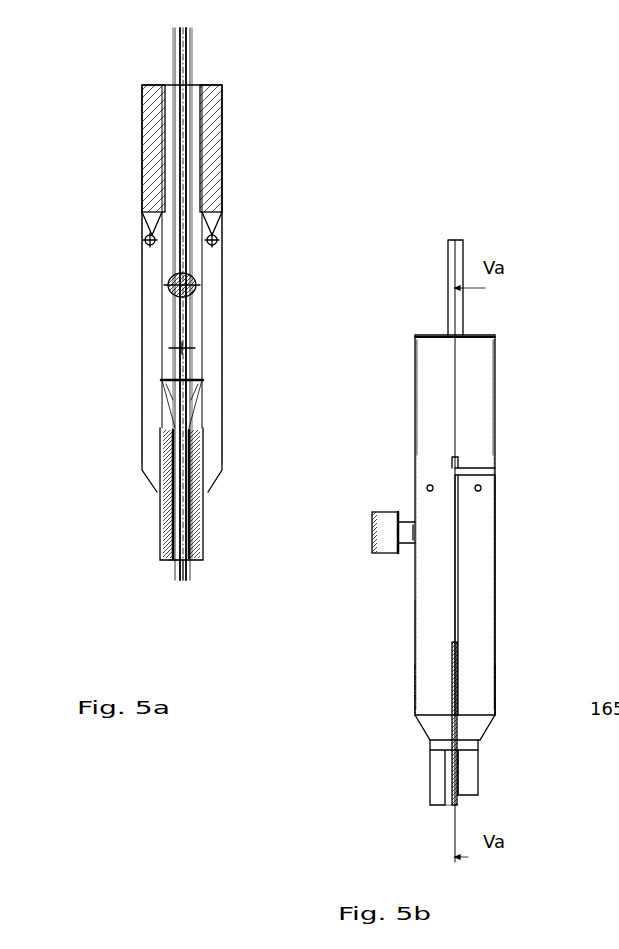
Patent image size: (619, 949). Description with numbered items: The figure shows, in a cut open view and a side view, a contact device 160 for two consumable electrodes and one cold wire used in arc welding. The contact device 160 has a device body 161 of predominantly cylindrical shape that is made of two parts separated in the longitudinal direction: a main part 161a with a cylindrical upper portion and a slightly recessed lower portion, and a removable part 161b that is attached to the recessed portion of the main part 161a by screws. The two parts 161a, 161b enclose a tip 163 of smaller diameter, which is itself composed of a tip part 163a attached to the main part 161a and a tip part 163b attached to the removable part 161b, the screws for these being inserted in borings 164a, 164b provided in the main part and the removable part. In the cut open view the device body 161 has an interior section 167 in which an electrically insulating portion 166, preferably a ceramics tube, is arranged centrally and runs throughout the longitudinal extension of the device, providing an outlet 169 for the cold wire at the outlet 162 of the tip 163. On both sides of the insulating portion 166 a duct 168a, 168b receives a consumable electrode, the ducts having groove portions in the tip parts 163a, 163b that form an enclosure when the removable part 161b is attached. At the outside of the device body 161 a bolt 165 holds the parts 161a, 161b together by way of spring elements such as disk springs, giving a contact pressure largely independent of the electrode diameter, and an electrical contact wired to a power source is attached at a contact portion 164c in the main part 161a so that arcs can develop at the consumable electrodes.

In FIG. 5A, the contact device 160 is at (142, 260).
In FIG. 5B, the contact device 160 is at (420, 368).
In FIG. 5A, the device body 161 is at (142, 327).
In FIG. 5B, the device body 161 is at (417, 440).
In FIG. 5A, the main part 161a is at (224, 147).
In FIG. 5B, the main part 161a is at (492, 386).
In FIG. 5B, the removable part 161b is at (470, 545).
In FIG. 5A, the outlet 162 is at (172, 570).
In FIG. 5B, the outlet 162 is at (490, 807).
In FIG. 5A, the tip 163 is at (160, 510).
In FIG. 5B, the tip 163 is at (438, 766).
In FIG. 5B, the tip part 163a is at (438, 807).
In FIG. 5B, the tip part 163b is at (478, 765).
In FIG. 5B, the boring 164a is at (418, 695).
In FIG. 5B, the boring 164b is at (492, 673).
In FIG. 5B, the contact portion 164c is at (418, 595).
In FIG. 5B, the bolt 165 is at (392, 515).
In FIG. 5A, the electrically insulating portion 166 is at (183, 62).
In FIG. 5B, the electrically insulating portion 166 is at (457, 240).
In FIG. 5A, the interior section 167 is at (190, 307).
In FIG. 5A, the duct 168a is at (167, 110).
In FIG. 5A, the duct 168b is at (190, 120).
In FIG. 5A, the outlet 169 is at (195, 562).